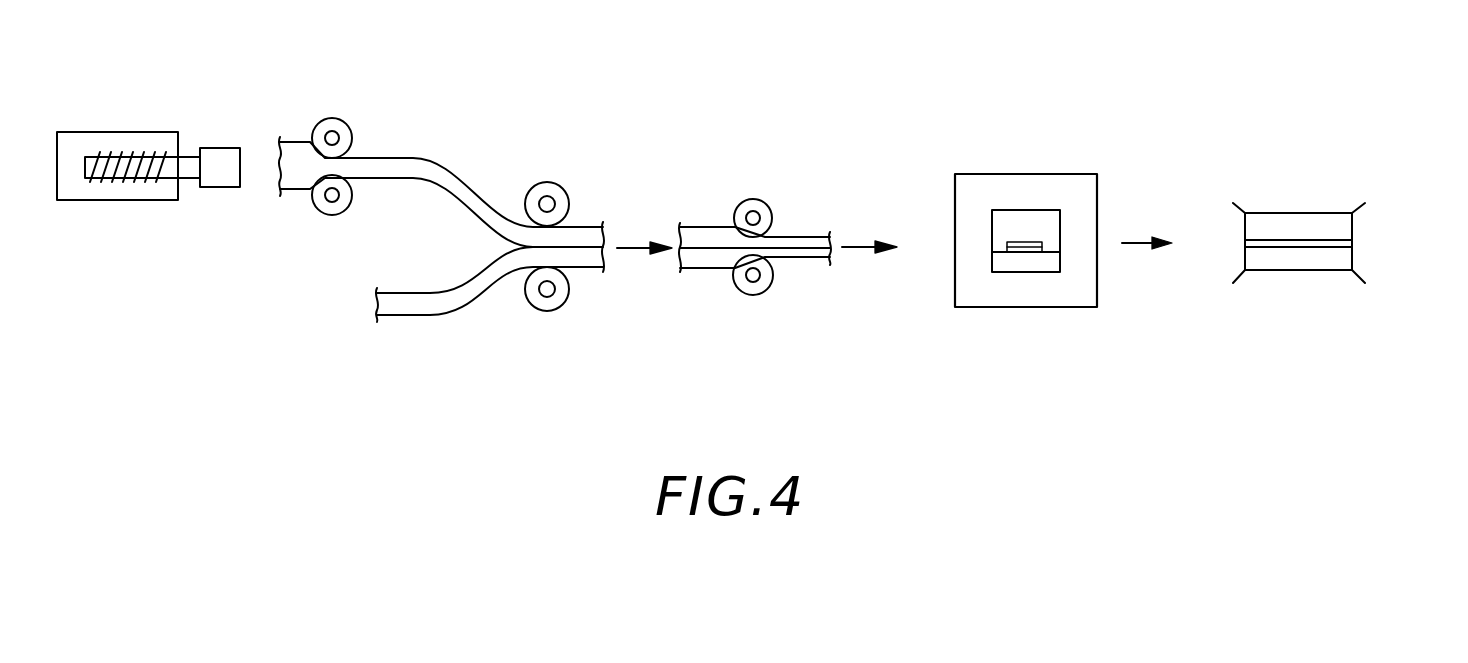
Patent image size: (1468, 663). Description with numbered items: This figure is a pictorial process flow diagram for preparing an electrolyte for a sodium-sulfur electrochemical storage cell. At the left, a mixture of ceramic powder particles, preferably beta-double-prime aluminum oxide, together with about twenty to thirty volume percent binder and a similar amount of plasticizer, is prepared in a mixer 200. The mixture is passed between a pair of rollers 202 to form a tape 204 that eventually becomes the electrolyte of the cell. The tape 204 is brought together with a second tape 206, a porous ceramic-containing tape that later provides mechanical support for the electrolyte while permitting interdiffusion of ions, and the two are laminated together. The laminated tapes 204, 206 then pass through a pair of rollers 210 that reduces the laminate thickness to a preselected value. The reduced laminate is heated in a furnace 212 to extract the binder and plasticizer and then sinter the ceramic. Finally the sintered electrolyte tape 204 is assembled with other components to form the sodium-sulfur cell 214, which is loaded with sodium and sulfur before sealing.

The mixer 200 is at (136, 132).
The pair of rollers 202 is at (361, 100).
The tape 204 is at (470, 180).
The second tape 206 is at (433, 308).
The pair of rollers 210 is at (758, 293).
The furnace 212 is at (1013, 307).
The sodium-sulfur cell 214 is at (1353, 228).